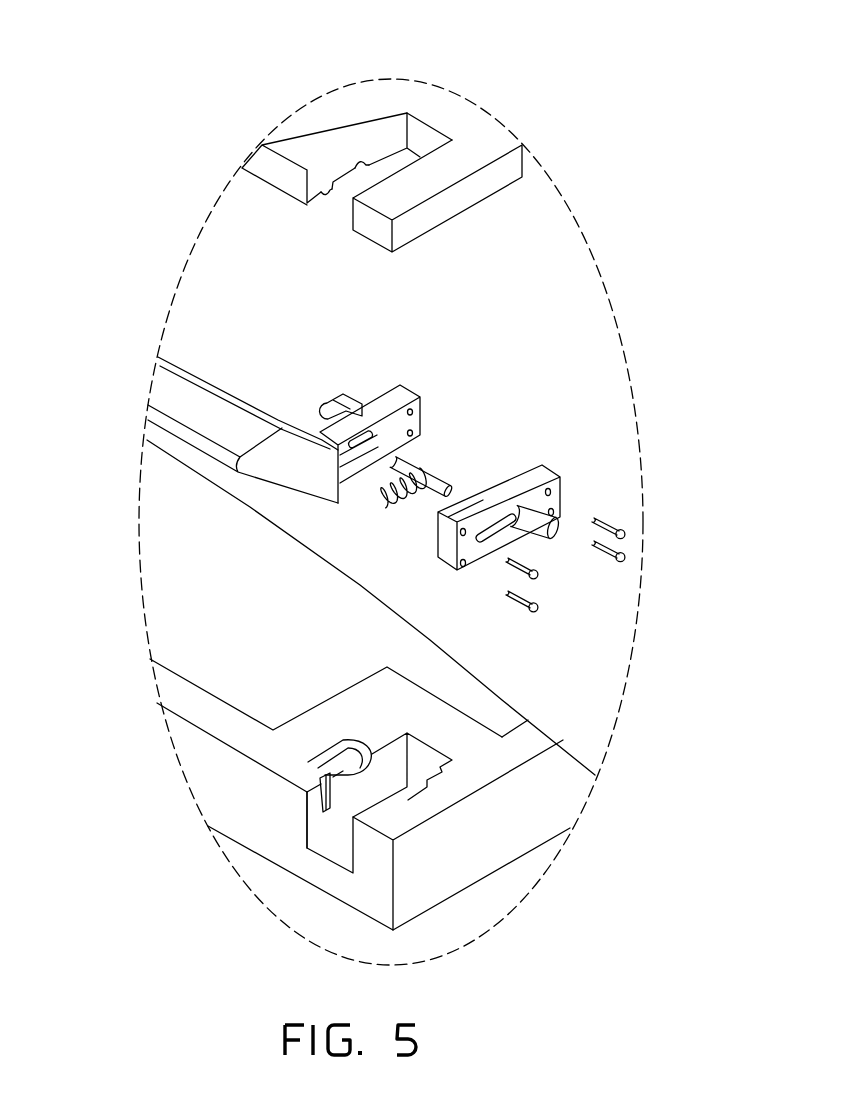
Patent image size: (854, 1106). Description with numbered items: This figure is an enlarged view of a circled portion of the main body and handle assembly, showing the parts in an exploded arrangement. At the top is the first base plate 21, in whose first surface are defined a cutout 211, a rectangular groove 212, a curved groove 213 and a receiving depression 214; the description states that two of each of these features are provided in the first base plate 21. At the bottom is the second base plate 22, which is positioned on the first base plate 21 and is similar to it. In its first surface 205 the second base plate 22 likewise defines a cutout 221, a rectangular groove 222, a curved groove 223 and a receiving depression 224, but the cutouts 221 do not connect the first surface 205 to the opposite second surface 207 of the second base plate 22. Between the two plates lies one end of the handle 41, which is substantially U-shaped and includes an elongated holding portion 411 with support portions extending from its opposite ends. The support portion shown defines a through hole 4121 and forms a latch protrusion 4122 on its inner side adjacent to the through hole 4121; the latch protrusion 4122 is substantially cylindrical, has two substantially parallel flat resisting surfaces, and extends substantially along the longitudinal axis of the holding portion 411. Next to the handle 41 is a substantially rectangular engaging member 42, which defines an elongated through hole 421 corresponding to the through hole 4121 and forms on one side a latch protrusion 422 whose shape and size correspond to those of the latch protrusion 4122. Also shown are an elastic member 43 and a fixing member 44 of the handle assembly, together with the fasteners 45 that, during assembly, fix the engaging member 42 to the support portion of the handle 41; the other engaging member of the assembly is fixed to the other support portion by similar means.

The first base plate 21 is at (396, 167).
The cutout 211 is at (398, 160).
The rectangular groove 212 is at (331, 184).
The curved groove 213 is at (356, 170).
The receiving depression 214 is at (324, 190).
The handle 41 is at (242, 423).
The holding portion 411 is at (177, 398).
The through hole 4121 is at (353, 447).
The latch protrusion 4122 is at (299, 377).
The engaging member 42 is at (566, 524).
The elongated through hole 421 is at (488, 537).
The latch protrusion 422 is at (555, 532).
The elastic member 43 is at (381, 500).
The fixing member 44 is at (443, 477).
The fastener 45 is at (607, 522).
The second base plate 22 is at (391, 716).
The cutout 221 is at (342, 848).
The rectangular groove 222 is at (308, 762).
The curved groove 223 is at (343, 750).
The receiving depression 224 is at (318, 795).
The first surface 205 is at (528, 750).
The second surface 207 is at (468, 893).